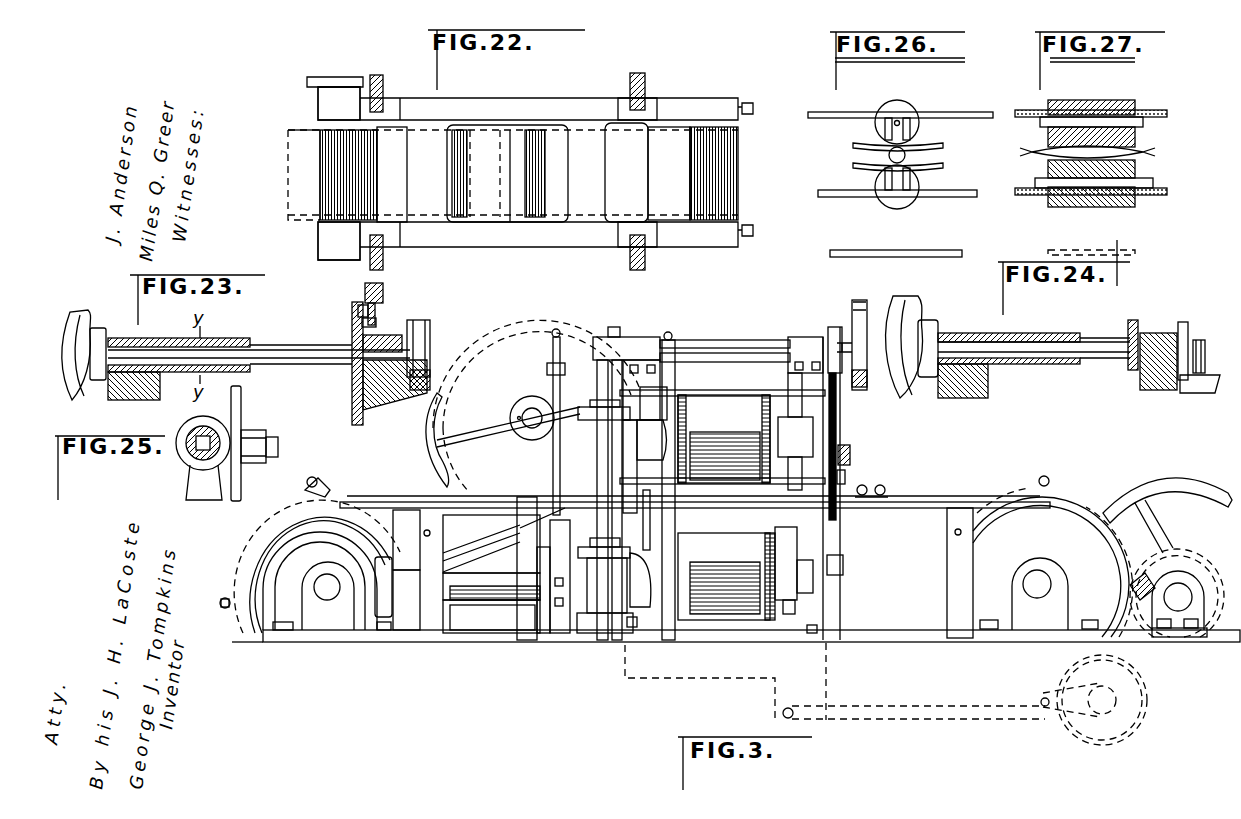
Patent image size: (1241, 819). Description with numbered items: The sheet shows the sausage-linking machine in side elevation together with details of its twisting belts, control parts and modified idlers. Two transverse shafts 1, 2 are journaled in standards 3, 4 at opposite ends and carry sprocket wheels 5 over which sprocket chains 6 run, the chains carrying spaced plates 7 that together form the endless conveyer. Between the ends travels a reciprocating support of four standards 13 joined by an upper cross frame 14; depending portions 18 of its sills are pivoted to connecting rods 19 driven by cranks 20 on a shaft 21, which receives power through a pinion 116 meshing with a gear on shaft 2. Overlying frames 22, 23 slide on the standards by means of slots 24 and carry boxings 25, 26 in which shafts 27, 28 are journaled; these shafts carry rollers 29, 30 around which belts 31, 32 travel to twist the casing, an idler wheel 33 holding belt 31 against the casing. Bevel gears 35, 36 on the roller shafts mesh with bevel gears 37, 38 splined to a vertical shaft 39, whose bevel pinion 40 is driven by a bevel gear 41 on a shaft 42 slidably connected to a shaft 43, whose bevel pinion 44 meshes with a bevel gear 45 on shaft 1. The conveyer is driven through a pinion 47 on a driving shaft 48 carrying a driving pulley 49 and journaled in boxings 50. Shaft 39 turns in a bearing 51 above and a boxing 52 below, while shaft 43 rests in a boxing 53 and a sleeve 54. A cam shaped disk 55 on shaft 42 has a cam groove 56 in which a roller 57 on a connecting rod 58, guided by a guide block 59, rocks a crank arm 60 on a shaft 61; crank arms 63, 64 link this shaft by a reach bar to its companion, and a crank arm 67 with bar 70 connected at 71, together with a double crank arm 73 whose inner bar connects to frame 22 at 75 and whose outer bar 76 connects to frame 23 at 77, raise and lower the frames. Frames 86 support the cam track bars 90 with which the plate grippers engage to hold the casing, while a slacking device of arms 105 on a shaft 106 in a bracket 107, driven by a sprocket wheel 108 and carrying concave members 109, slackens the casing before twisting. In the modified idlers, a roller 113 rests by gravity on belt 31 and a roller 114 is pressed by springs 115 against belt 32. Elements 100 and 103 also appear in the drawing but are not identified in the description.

In FIG. 3, the transverse shaft 1 is at (327, 587).
In FIG. 3, the transverse shaft 2 is at (1037, 584).
In FIG. 3, the standard or upright 3 is at (327, 581).
In FIG. 3, the standard or upright 4 is at (1039, 594).
In FIG. 3, the sprocket wheels 5 is at (388, 512).
In FIG. 3, the sprocket chains 6 is at (990, 498).
In FIG. 3, the plates or rests 7 is at (840, 510).
In FIG. 22, the standards 13 is at (384, 86).
In FIG. 3, the cross frame or brace 14 is at (760, 330).
In FIG. 3, the depending portions 18 is at (780, 705).
In FIG. 3, the connecting rods 19 is at (935, 712).
In FIG. 3, the cranks 20 is at (1045, 708).
In FIG. 3, the shaft 21 is at (1105, 700).
In FIG. 22, the frame 22 is at (543, 233).
In FIG. 26, the frame 22 is at (836, 110).
In FIG. 27, the frame 22 is at (1165, 112).
In FIG. 26, the frame 23 is at (830, 198).
In FIG. 27, the frame 23 is at (1150, 198).
In FIG. 22, the grooves or slots 24 is at (648, 105).
In FIG. 22, the boxings 25 is at (330, 108).
In FIG. 3, the boxings 25 is at (812, 440).
In FIG. 22, the boxings 26 is at (731, 236).
In FIG. 22, the shaft 27 is at (330, 175).
In FIG. 3, the shaft 27 is at (790, 425).
In FIG. 3, the shaft 28 is at (678, 630).
In FIG. 22, the rollers or pulleys 29 is at (305, 142).
In FIG. 3, the rollers or pulleys 29 is at (780, 400).
In FIG. 3, the rollers or pulleys 30 is at (778, 620).
In FIG. 22, the belt 31 is at (392, 130).
In FIG. 3, the belt 31 is at (724, 439).
In FIG. 3, the belt 32 is at (726, 576).
In FIG. 22, the idler wheel 33 is at (507, 173).
In FIG. 3, the bevel gear 35 is at (640, 410).
In FIG. 3, the bevel gear 36 is at (635, 648).
In FIG. 3, the bevel gear 37 is at (590, 423).
In FIG. 3, the bevel gear 38 is at (635, 550).
In FIG. 24, the vertically disposed shaft 39 is at (1205, 345).
In FIG. 23, the vertically disposed shaft 39 is at (432, 352).
In FIG. 3, the vertically disposed shaft 39 is at (580, 460).
In FIG. 24, the bevel pinion 40 is at (1195, 394).
In FIG. 23, the bevel pinion 40 is at (428, 370).
In FIG. 3, the bevel pinion 40 is at (582, 628).
In FIG. 24, the bevel gear 41 is at (1185, 325).
In FIG. 23, the bevel gear 41 is at (428, 342).
In FIG. 3, the bevel gear 41 is at (542, 628).
In FIG. 24, the shaft 42 is at (1142, 372).
In FIG. 23, the shaft 42 is at (363, 375).
In FIG. 24, the shaft 43 is at (1033, 337).
In FIG. 23, the shaft 43 is at (130, 338).
In FIG. 25, the shaft 43 is at (200, 470).
In FIG. 24, the bevel pinion 44 is at (948, 330).
In FIG. 23, the bevel pinion 44 is at (99, 382).
In FIG. 25, the bevel pinion 44 is at (185, 465).
In FIG. 3, the bevel pinion 44 is at (380, 590).
In FIG. 24, the bevel gear 45 is at (925, 310).
In FIG. 23, the bevel gear 45 is at (78, 310).
In FIG. 25, the bevel gear 45 is at (243, 418).
In FIG. 3, the bevel gear 45 is at (275, 575).
In FIG. 3, the pinion 47 is at (1190, 560).
In FIG. 3, the driving shaft 48 is at (1179, 604).
In FIG. 3, the driving pulley 49 is at (1178, 470).
In FIG. 3, the boxings 50 is at (1172, 640).
In FIG. 3, the bearing 51 is at (602, 345).
In FIG. 3, the boxing 52 is at (602, 642).
In FIG. 3, the boxing 53 is at (425, 640).
In FIG. 3, the sleeve 54 is at (492, 592).
In FIG. 24, the cam shaped disk 55 is at (1138, 330).
In FIG. 23, the cam shaped disk 55 is at (364, 424).
In FIG. 3, the cam shaped disk 55 is at (528, 618).
In FIG. 23, the cam slot or groove 56 is at (354, 405).
In FIG. 23, the roller 57 is at (357, 310).
In FIG. 23, the connecting rod 58 is at (378, 320).
In FIG. 3, the connecting rod 58 is at (540, 398).
In FIG. 23, the guide block 59 is at (365, 290).
In FIG. 3, the guide block 59 is at (515, 535).
In FIG. 3, the crank arm 60 is at (548, 345).
In FIG. 3, the shaft 61 is at (722, 325).
In FIG. 3, the crank arm 63 is at (852, 310).
In FIG. 3, the crank arm 64 is at (880, 362).
In FIG. 3, the crank arm 67 is at (678, 372).
In FIG. 3, the bar 70 is at (662, 490).
In FIG. 3, the connection 71 is at (652, 562).
In FIG. 3, the double crank arm 73 is at (830, 336).
In FIG. 3, the connection 75 is at (852, 455).
In FIG. 3, the bar 76 is at (846, 478).
In FIG. 3, the connection 77 is at (845, 562).
In FIG. 3, the frames 86 is at (957, 572).
In FIG. 3, the bars 90 is at (915, 505).
In FIG. 3, the spring 100 is at (320, 470).
In FIG. 3, the screw 103 is at (222, 610).
In FIG. 3, the radially extended arms 105 is at (496, 430).
In FIG. 3, the shaft 106 is at (530, 425).
In FIG. 3, the standard or bracket 107 is at (500, 595).
In FIG. 3, the sprocket wheel 108 is at (530, 333).
In FIG. 3, the members 109 is at (440, 460).
In FIG. 26, the roller 113 is at (905, 106).
In FIG. 27, the roller 113 is at (1128, 88).
In FIG. 26, the roller 114 is at (900, 207).
In FIG. 27, the roller 114 is at (1105, 205).
In FIG. 26, the springs 115 is at (882, 205).
In FIG. 27, the springs 115 is at (1087, 152).
In FIG. 3, the pinion 116 is at (1110, 745).